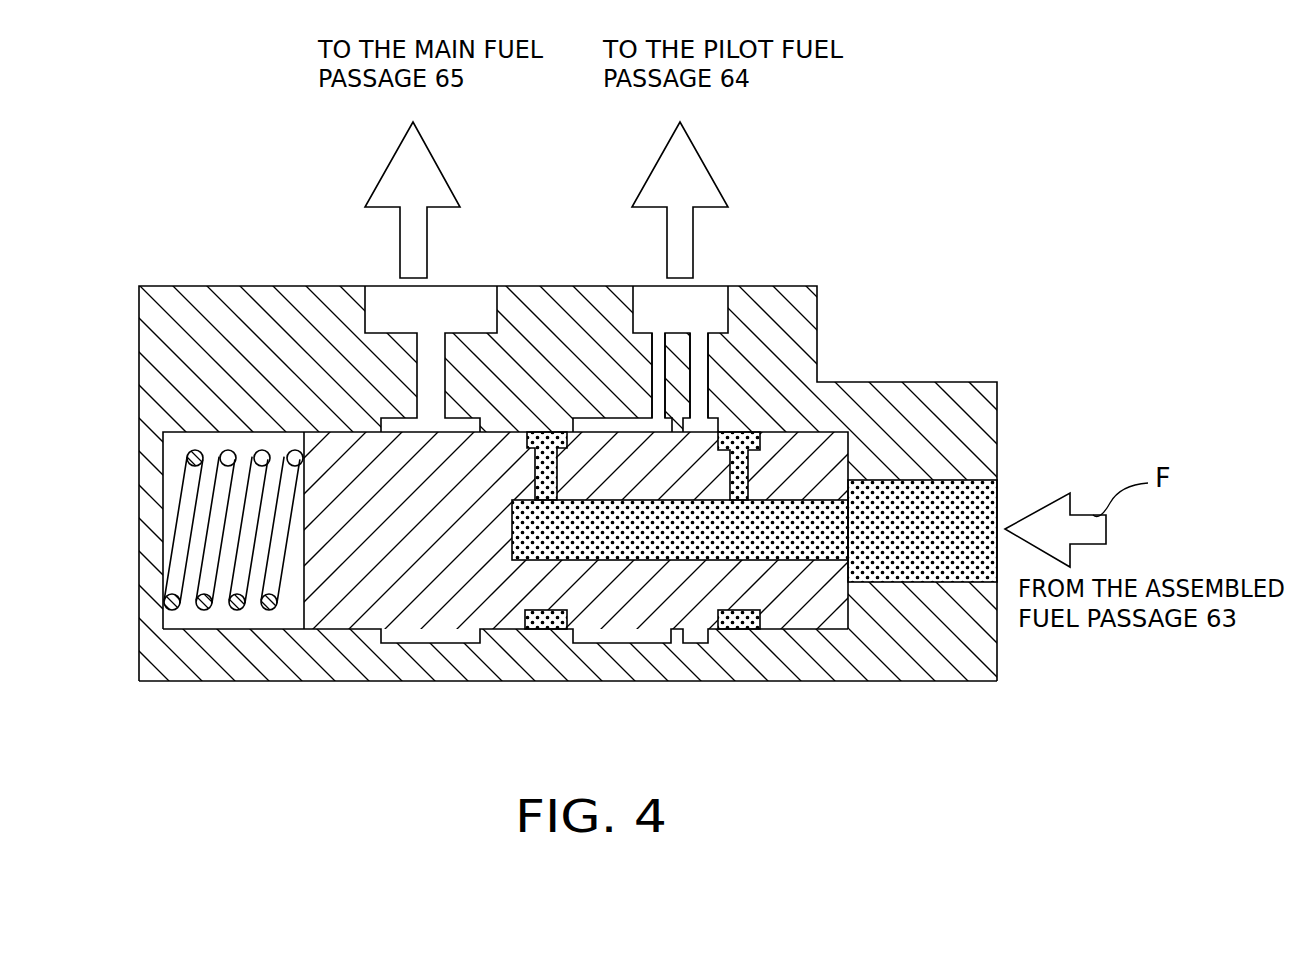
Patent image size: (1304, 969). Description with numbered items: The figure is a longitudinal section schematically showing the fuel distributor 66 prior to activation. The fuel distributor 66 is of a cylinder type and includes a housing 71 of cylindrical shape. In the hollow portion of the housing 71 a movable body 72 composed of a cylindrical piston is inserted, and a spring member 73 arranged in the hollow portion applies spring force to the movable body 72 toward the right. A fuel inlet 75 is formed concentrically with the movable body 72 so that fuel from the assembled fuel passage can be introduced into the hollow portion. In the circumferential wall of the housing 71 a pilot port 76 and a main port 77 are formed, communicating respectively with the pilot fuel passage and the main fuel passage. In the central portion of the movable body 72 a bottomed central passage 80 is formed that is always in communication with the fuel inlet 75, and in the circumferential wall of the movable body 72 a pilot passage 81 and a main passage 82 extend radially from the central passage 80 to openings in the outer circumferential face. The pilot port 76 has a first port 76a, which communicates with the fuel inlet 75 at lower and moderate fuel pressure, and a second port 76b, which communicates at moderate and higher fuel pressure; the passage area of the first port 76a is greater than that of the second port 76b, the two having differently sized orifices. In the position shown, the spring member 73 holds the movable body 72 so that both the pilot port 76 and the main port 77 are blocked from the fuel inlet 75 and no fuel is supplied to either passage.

The fuel distributor 66 is at (1052, 280).
The housing 71 is at (227, 300).
The movable body 72 is at (802, 613).
The spring member 73 is at (247, 587).
The fuel inlet 75 is at (985, 493).
The pilot port 76 is at (917, 207).
The first port 76a is at (702, 376).
The second port 76b is at (657, 342).
The main port 77 is at (430, 337).
The central passage 80 is at (627, 545).
The pilot passage 81 is at (738, 472).
The main passage 82 is at (535, 475).